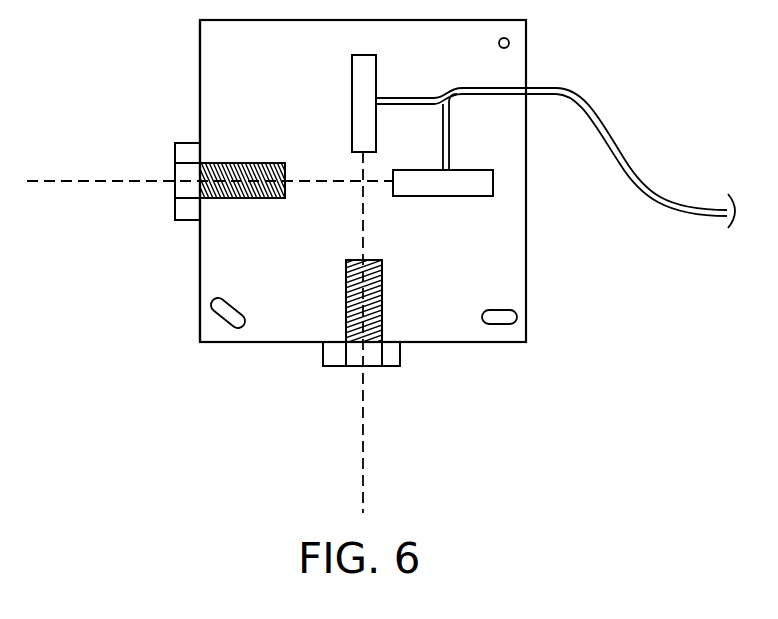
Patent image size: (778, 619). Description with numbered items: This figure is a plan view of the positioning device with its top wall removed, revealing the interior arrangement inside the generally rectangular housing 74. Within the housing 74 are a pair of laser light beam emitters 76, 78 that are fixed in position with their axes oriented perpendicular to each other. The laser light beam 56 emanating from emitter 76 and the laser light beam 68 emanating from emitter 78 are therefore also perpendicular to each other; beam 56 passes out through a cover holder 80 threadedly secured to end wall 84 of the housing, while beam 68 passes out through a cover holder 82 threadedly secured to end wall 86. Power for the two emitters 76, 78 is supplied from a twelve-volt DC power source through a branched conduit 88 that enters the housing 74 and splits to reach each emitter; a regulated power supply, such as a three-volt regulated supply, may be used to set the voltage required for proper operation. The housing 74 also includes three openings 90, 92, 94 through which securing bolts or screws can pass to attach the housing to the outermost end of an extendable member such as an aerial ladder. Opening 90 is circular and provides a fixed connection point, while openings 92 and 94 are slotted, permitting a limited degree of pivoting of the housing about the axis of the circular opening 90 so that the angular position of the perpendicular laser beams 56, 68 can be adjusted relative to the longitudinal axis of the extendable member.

The laser light beam 56 is at (65, 181).
The laser light beam 68 is at (363, 458).
The housing 74 is at (490, 223).
The laser light beam emitter 76 is at (440, 198).
The laser light beam emitter 78 is at (352, 98).
The cover holder 80 is at (175, 205).
The cover holder 82 is at (401, 353).
The end wall 84 is at (200, 60).
The end wall 86 is at (290, 343).
The branched conduit 88 is at (655, 192).
The opening 90 is at (510, 43).
The opening 92 is at (517, 317).
The opening 94 is at (216, 310).